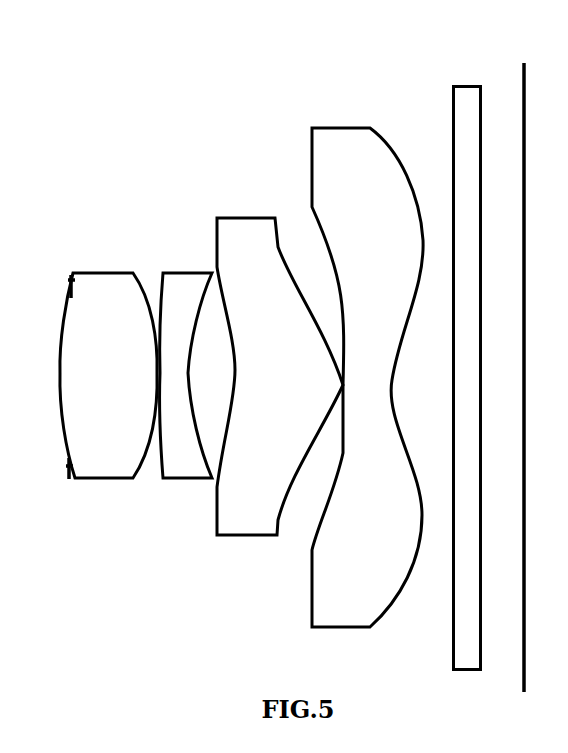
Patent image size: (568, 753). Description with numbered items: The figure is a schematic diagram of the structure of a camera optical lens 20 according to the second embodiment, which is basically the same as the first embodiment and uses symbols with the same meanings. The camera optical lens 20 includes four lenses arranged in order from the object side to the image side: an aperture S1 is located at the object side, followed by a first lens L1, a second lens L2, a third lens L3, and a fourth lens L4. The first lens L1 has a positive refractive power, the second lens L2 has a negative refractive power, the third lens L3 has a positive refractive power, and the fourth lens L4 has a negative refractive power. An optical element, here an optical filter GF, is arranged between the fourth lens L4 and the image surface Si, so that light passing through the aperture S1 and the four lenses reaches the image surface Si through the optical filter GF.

The camera optical lens 20 is at (285, 53).
The aperture S1 is at (53, 371).
The first lens L1 is at (108, 363).
The second lens L2 is at (186, 362).
The third lens L3 is at (280, 363).
The fourth lens L4 is at (367, 364).
The optical filter GF is at (467, 363).
The image surface Si is at (519, 365).